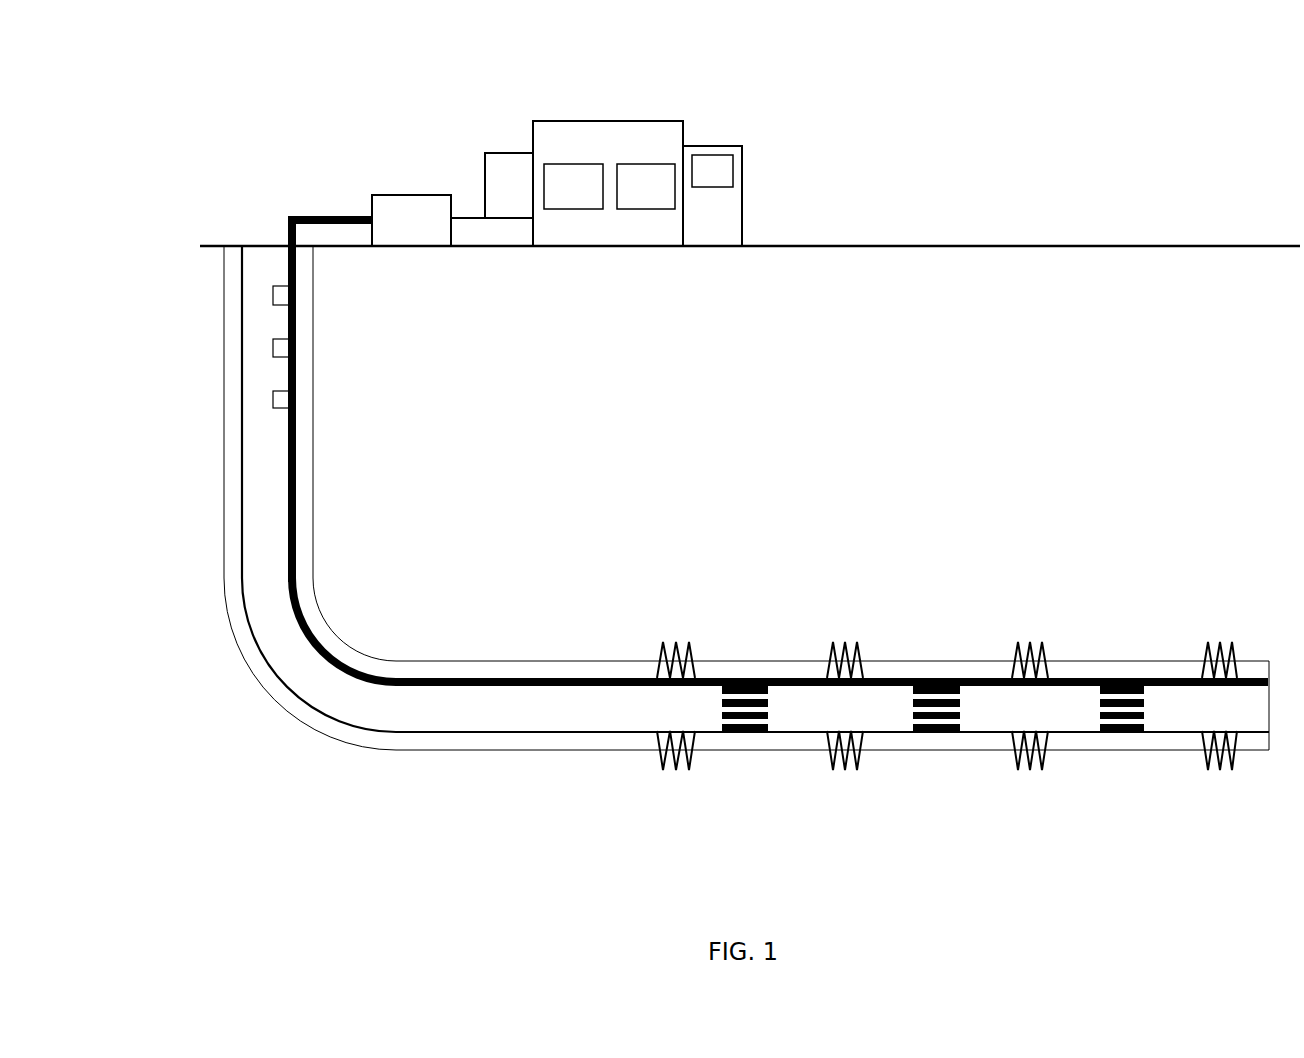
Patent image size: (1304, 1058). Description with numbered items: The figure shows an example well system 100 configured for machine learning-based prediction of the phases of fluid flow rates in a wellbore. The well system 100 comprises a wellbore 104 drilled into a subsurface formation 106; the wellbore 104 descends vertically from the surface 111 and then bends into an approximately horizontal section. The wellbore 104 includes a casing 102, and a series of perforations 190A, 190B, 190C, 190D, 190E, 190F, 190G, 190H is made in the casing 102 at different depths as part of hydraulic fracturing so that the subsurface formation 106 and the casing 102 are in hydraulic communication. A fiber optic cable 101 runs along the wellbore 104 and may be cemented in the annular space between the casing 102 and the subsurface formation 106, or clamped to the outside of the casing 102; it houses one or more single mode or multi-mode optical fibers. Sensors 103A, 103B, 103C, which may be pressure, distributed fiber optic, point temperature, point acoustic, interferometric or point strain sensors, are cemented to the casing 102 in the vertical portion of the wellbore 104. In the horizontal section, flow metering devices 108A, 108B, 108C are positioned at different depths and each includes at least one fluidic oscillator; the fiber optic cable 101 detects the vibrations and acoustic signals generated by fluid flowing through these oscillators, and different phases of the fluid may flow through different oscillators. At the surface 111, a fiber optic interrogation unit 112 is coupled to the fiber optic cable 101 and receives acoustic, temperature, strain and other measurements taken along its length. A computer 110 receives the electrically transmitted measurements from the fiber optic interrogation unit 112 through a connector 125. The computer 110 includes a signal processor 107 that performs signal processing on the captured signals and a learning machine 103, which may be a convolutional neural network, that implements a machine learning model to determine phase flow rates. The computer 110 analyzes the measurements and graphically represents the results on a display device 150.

The well system 100 is at (210, 110).
The fiber optic cable 101 is at (459, 678).
The casing 102 is at (400, 751).
The learning machine 103 is at (645, 163).
The sensor 103A is at (285, 294).
The sensor 103B is at (285, 347).
The sensor 103C is at (285, 398).
The wellbore 104 is at (224, 406).
The subsurface formation 106 is at (514, 386).
The signal processor 107 is at (573, 210).
The flow metering device 108A is at (745, 675).
The flow metering device 108B is at (937, 675).
The flow metering device 108C is at (1125, 677).
The computer 110 is at (551, 121).
The surface 111 is at (974, 246).
The fiber optic interrogation unit 112 is at (428, 220).
The connector 125 is at (465, 216).
The display device 150 is at (712, 155).
The perforation 190A is at (668, 642).
The perforation 190B is at (670, 770).
The perforation 190C is at (850, 641).
The perforation 190D is at (847, 770).
The perforation 190E is at (1038, 641).
The perforation 190F is at (1035, 770).
The perforation 190G is at (1225, 641).
The perforation 190H is at (1228, 770).